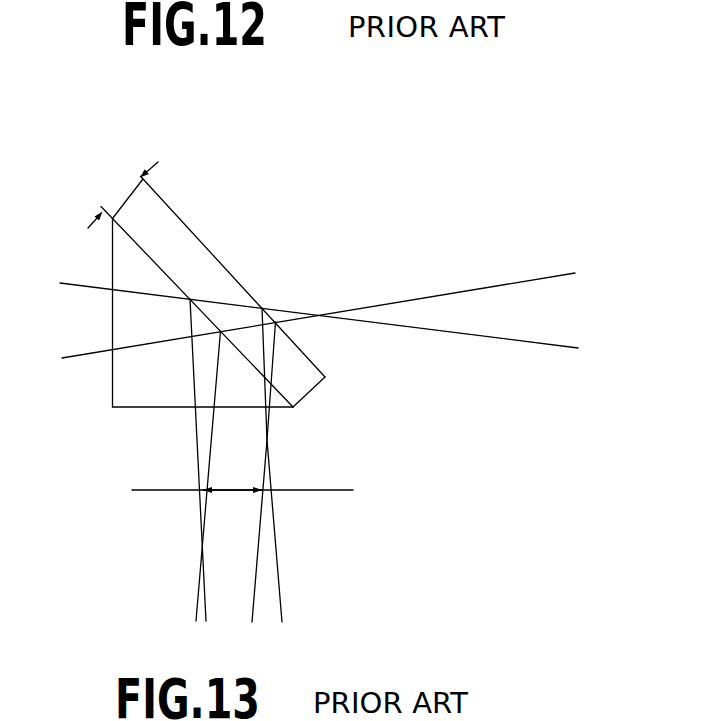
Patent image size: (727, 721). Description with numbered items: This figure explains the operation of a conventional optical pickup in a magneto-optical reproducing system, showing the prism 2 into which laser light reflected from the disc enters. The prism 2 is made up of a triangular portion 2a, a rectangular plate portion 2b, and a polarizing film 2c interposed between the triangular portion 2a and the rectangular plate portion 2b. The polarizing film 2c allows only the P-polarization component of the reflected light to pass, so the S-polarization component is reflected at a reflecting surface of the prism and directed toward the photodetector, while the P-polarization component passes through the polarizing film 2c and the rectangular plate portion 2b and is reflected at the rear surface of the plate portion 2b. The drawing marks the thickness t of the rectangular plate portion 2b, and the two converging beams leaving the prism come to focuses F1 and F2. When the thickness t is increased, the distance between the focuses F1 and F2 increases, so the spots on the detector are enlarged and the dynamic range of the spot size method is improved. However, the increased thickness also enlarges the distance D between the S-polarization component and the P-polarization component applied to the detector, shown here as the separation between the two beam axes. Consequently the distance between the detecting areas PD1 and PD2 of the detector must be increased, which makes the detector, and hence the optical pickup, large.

The prism 2 is at (178, 278).
The triangular portion 2a is at (123, 267).
The rectangular plate portion 2b is at (212, 270).
The polarizing film 2c is at (148, 248).
The thickness t is at (123, 195).
The focus F1 is at (200, 553).
The focus F2 is at (269, 433).
The distance D is at (231, 490).
The detecting area PD1 is at (155, 487).
The detecting area PD2 is at (323, 486).